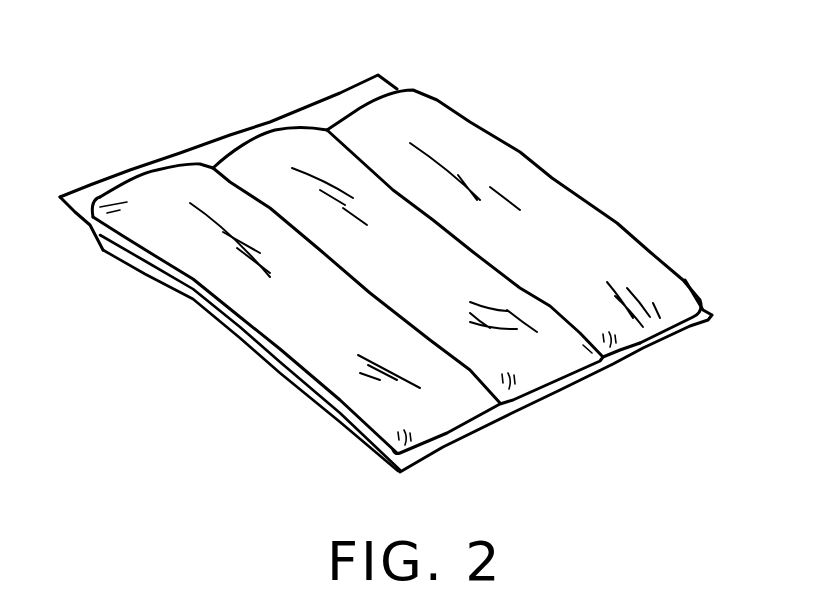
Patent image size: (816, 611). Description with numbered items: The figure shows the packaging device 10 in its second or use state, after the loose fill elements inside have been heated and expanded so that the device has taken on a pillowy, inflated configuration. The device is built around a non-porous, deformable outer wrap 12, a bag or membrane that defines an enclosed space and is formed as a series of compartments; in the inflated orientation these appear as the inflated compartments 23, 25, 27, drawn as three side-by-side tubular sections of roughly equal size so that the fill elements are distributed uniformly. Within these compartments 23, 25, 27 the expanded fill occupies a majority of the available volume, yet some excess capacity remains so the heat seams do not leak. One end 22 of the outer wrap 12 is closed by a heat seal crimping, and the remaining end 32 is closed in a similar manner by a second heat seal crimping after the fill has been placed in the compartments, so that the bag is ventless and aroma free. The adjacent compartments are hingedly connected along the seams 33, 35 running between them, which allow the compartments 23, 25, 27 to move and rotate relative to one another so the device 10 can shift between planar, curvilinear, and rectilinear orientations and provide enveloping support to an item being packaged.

The packaging device 10 is at (525, 98).
The outer wrap 12 is at (552, 183).
The end 22 is at (613, 366).
The inflated compartment 23 is at (455, 138).
The inflated compartment 25 is at (287, 157).
The inflated compartment 27 is at (210, 265).
The remaining end 32 is at (327, 107).
The seam 33 is at (550, 305).
The seam 35 is at (370, 293).